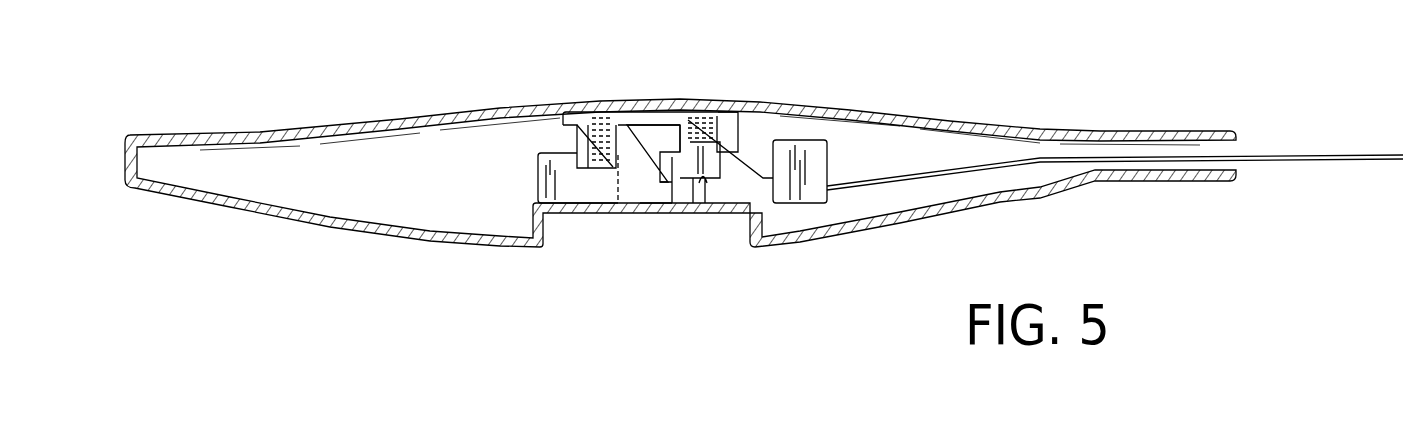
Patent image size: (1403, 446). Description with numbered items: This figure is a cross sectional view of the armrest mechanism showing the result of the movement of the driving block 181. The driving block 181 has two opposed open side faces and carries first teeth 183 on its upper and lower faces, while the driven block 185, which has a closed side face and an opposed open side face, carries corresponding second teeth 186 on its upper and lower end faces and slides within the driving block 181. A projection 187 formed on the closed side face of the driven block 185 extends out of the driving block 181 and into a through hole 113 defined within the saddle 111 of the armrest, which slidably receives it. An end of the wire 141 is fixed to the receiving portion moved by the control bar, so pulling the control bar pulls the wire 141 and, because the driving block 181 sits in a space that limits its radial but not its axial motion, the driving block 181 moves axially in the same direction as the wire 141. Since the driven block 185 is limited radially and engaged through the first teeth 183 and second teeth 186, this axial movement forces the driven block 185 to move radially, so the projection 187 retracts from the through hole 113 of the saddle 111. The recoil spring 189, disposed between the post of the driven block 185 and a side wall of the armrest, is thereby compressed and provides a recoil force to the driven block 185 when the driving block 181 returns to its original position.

The saddle 111 is at (547, 240).
The through hole 113 is at (612, 213).
The wire 141 is at (1338, 154).
The driving block 181 is at (824, 152).
The first teeth 183 is at (632, 124).
The driven block 185 is at (676, 116).
The second teeth 186 is at (703, 203).
The projection 187 is at (650, 206).
The recoil spring 189 is at (735, 98).